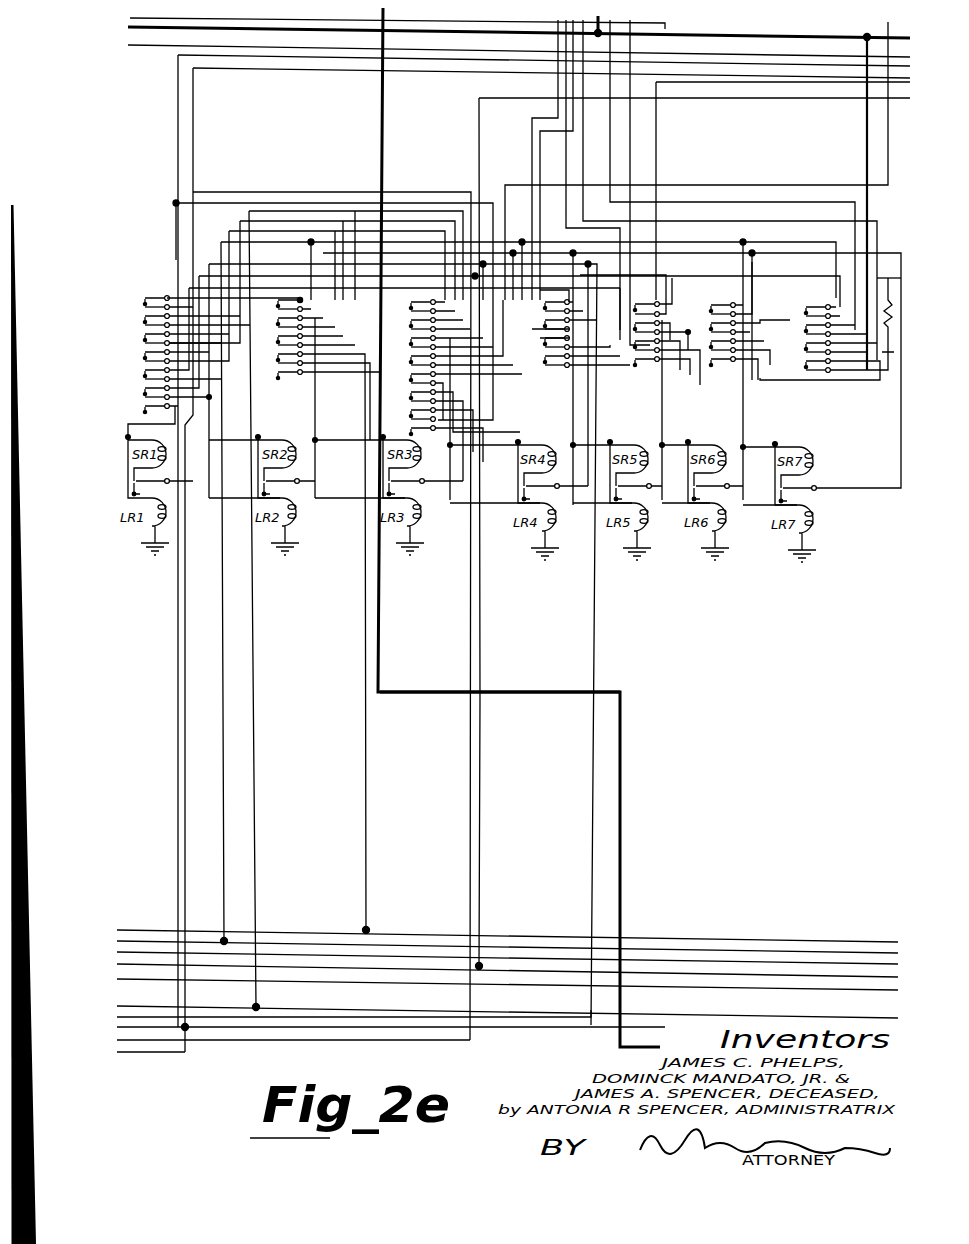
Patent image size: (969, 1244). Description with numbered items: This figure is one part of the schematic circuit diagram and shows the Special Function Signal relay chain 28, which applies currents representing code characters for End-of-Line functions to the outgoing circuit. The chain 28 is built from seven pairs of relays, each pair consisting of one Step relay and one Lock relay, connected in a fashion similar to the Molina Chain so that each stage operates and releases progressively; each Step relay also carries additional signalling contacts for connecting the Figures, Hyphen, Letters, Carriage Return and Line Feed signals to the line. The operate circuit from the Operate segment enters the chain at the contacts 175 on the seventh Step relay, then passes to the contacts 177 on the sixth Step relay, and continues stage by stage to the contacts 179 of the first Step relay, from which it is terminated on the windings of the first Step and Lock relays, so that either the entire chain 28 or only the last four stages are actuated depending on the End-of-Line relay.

The contacts of the Step relay SR1 179 is at (150, 406).
The contacts on the Step relay SR6 177 is at (722, 352).
The contacts on the Step relay SR7 175 is at (818, 352).
The Special Function Signal relay chain 28 is at (552, 595).